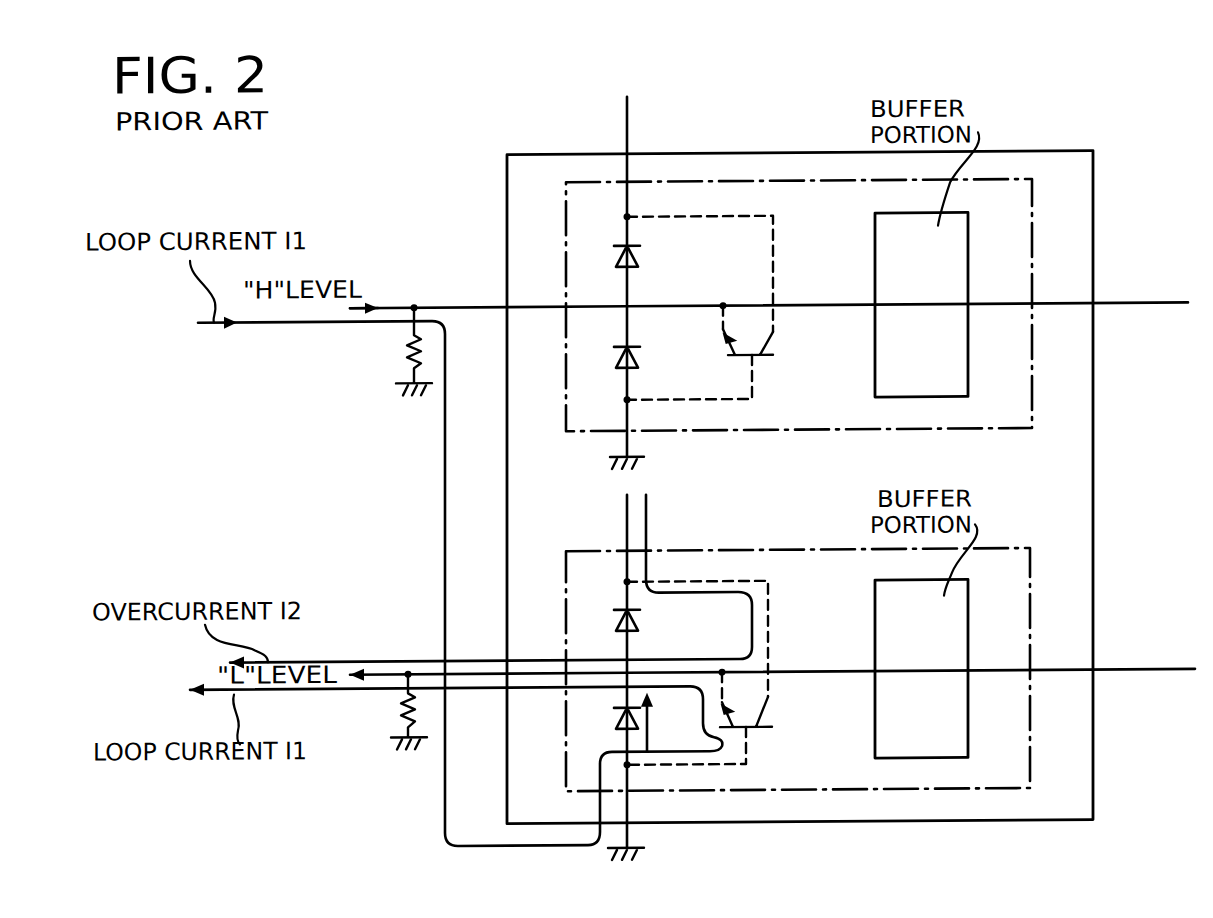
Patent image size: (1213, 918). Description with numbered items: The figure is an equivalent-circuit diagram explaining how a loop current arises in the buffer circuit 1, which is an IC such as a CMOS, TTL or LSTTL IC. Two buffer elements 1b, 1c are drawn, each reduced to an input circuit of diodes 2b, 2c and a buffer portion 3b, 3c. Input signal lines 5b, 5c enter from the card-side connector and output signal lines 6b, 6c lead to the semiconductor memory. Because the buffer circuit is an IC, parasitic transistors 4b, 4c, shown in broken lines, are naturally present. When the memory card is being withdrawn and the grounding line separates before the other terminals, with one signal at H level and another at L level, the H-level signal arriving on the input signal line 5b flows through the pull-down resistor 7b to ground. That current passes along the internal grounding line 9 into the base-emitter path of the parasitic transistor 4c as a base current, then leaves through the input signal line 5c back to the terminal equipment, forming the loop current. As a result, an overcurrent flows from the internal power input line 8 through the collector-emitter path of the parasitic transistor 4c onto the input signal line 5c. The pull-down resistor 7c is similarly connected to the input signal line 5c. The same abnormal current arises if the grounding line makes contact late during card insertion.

The buffer circuit 1 is at (1093, 181).
The buffer element 1b is at (1032, 263).
The buffer element 1c is at (1030, 592).
The diodes 2b is at (612, 246).
The diodes 2c is at (615, 620).
The buffer portion 3b is at (968, 243).
The buffer portion 3c is at (968, 613).
The parasitic transistor 4b is at (773, 358).
The parasitic transistor 4c is at (763, 730).
The input signal line 5b is at (478, 305).
The input signal line 5c is at (392, 671).
The output signal line 6b is at (1125, 306).
The output signal line 6c is at (1118, 672).
The pull-down resistor 7b is at (402, 355).
The pull-down resistor 7c is at (400, 712).
The internal power input line 8 is at (629, 123).
The internal grounding line 9 is at (630, 445).